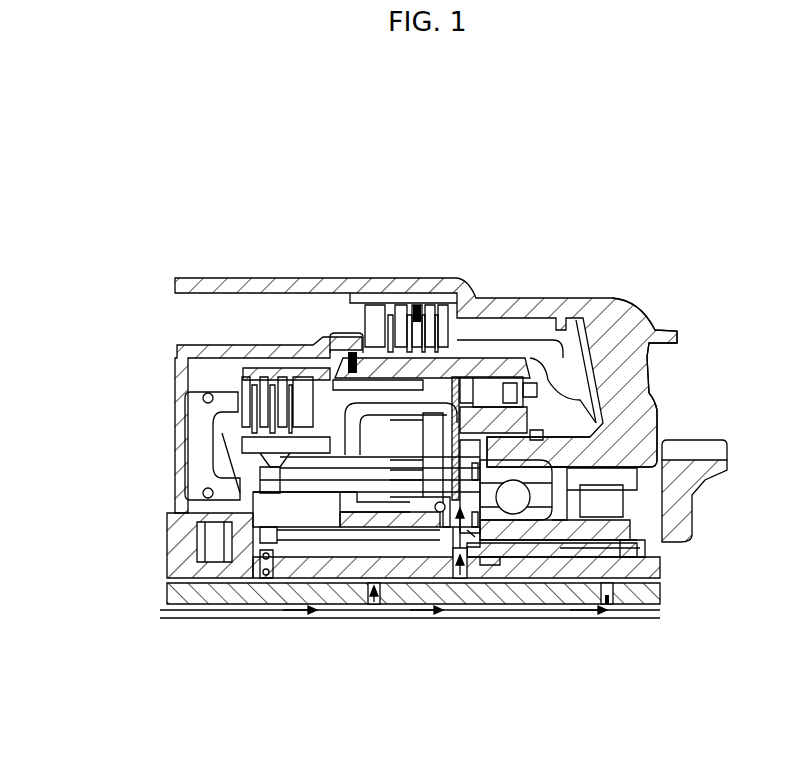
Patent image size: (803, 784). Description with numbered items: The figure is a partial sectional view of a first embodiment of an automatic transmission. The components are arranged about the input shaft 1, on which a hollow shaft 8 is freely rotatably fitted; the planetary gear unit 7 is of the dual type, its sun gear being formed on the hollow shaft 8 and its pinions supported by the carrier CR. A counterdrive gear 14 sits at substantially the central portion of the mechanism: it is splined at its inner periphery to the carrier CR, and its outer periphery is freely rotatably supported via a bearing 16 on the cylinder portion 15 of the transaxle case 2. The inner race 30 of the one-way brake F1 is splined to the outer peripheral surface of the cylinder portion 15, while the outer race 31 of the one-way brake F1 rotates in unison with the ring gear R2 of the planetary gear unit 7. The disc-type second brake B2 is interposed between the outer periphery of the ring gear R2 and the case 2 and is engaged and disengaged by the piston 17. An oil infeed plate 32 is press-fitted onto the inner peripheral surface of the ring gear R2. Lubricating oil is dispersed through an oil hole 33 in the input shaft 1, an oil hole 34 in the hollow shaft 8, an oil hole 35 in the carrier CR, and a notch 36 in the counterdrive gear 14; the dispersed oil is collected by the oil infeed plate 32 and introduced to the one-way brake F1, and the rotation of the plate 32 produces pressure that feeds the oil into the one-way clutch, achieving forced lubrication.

The input shaft 1 is at (208, 592).
The transaxle case 2 is at (617, 310).
The planetary gear unit 7 is at (319, 508).
The hollow shaft 8 is at (628, 557).
The counterdrive gear 14 is at (667, 517).
The cylinder portion 15 is at (590, 447).
The bearing 16 is at (517, 433).
The piston 17 is at (620, 318).
The inner race 30 is at (558, 470).
The outer race 31 is at (490, 357).
The oil infeed plate 32 is at (450, 377).
The oil hole 33 is at (376, 590).
The oil hole 34 is at (477, 560).
The oil hole 35 is at (440, 560).
The notch 36 is at (488, 562).
The carrier CR is at (640, 577).
The ring gear R2 is at (341, 372).
The second brake B2 is at (414, 312).
The one-way brake F1 is at (535, 384).